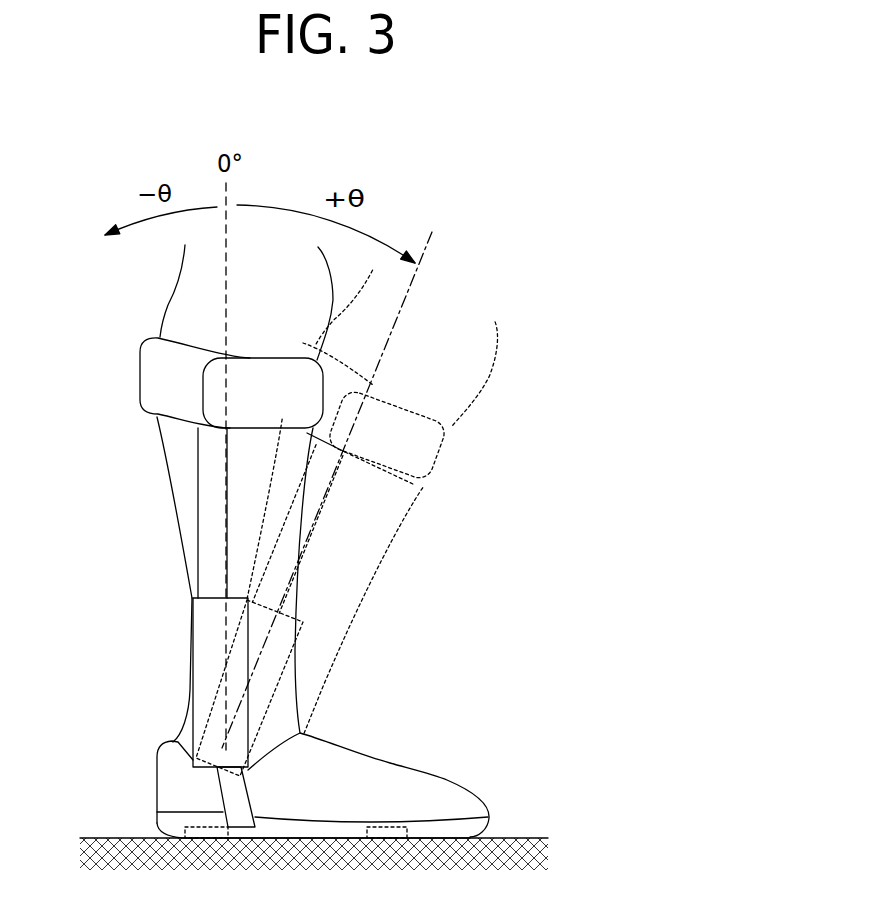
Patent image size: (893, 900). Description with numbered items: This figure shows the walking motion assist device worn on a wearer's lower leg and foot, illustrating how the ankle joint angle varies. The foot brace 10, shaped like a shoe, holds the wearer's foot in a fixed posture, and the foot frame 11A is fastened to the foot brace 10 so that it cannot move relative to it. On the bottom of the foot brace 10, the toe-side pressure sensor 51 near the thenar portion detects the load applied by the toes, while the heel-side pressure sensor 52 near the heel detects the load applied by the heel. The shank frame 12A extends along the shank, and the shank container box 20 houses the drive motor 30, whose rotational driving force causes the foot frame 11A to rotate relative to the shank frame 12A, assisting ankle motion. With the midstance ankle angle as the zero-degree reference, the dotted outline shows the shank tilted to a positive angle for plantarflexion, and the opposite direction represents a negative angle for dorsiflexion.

The foot brace 10 is at (441, 778).
The foot frame 11A is at (223, 795).
The shank frame 12A is at (180, 537).
The shank container box 20 is at (192, 651).
The drive motor 30 is at (139, 373).
The toe-side pressure sensor 51 is at (388, 827).
The heel-side pressure sensor 52 is at (183, 828).